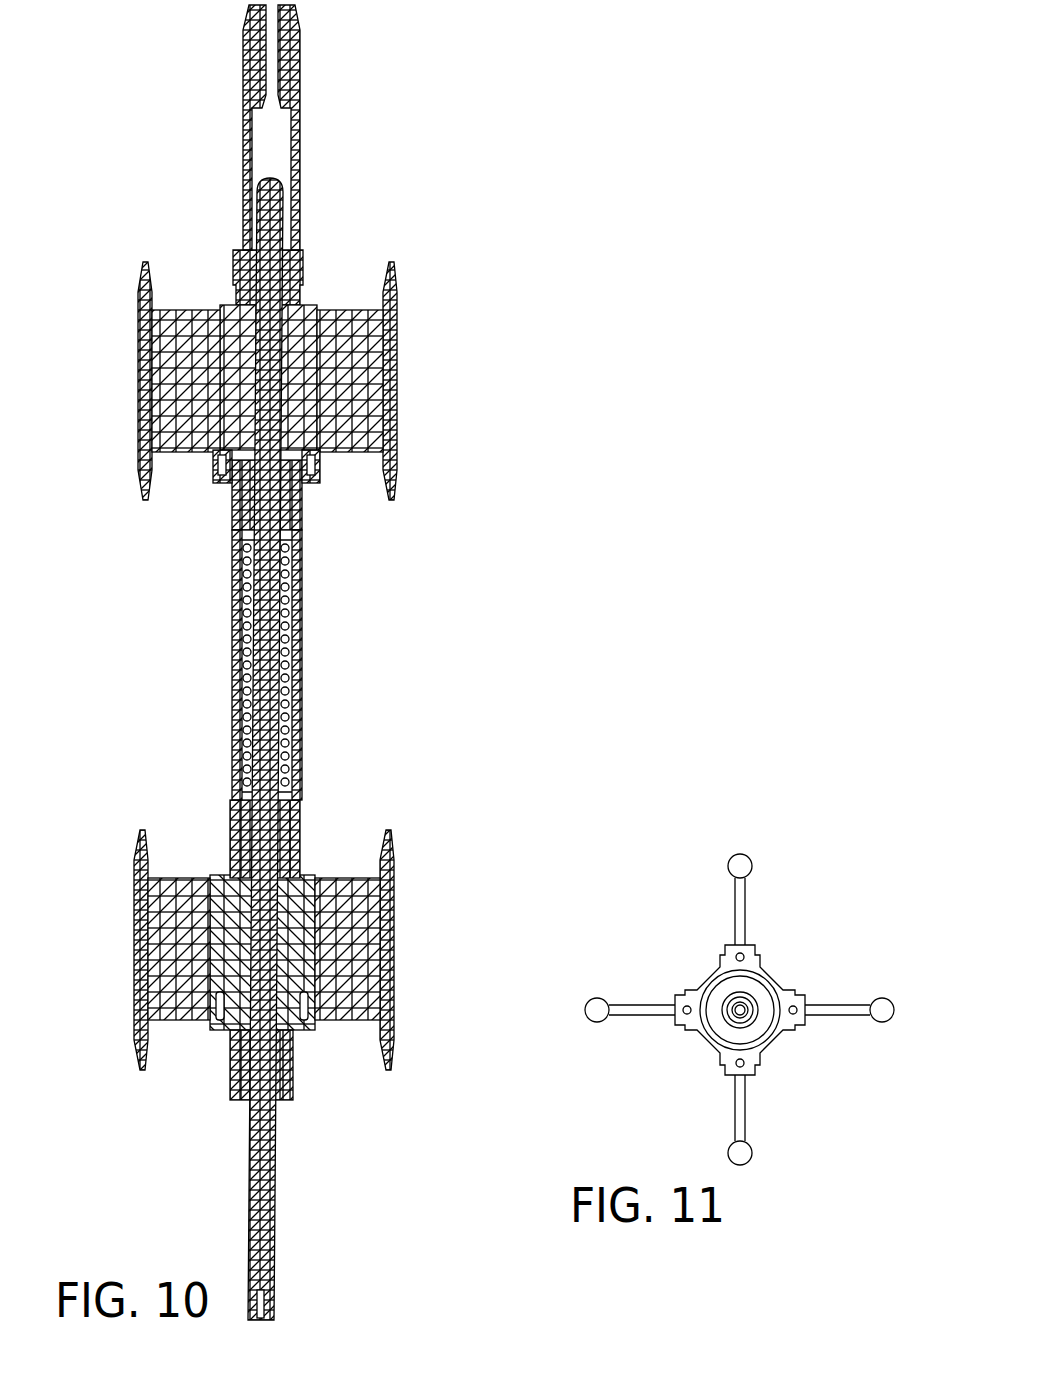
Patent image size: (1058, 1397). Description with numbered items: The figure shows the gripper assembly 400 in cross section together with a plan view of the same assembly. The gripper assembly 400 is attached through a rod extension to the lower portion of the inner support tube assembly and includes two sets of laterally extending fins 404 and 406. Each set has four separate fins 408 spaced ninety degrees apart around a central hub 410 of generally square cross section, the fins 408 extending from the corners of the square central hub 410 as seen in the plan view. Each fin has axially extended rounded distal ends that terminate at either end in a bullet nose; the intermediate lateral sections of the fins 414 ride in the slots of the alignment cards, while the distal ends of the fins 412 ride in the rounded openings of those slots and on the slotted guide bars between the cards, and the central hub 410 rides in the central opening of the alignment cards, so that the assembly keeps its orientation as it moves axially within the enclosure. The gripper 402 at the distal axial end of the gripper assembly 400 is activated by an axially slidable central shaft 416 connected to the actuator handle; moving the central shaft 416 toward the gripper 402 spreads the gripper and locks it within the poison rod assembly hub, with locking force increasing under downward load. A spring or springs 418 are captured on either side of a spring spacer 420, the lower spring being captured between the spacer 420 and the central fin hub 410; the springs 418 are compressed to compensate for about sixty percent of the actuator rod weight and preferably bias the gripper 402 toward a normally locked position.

In FIG. 10, the gripper assembly 400 is at (306, 662).
In FIG. 10, the gripper 402 is at (300, 64).
In FIG. 10, the first set of laterally extending fins 404 is at (420, 322).
In FIG. 10, the second set of laterally extending fins 406 is at (405, 927).
In FIG. 10, the fin 408 is at (180, 308).
In FIG. 11, the fin 408 is at (745, 918).
In FIG. 10, the central hub 410 is at (240, 472).
In FIG. 11, the central hub 410 is at (775, 975).
In FIG. 10, the distal ends of the fins 412 is at (136, 850).
In FIG. 10, the intermediate lateral sections of the fins 414 is at (165, 465).
In FIG. 10, the central shaft 416 is at (276, 1212).
In FIG. 10, the spring 418 is at (298, 600).
In FIG. 10, the spring spacer 420 is at (298, 666).